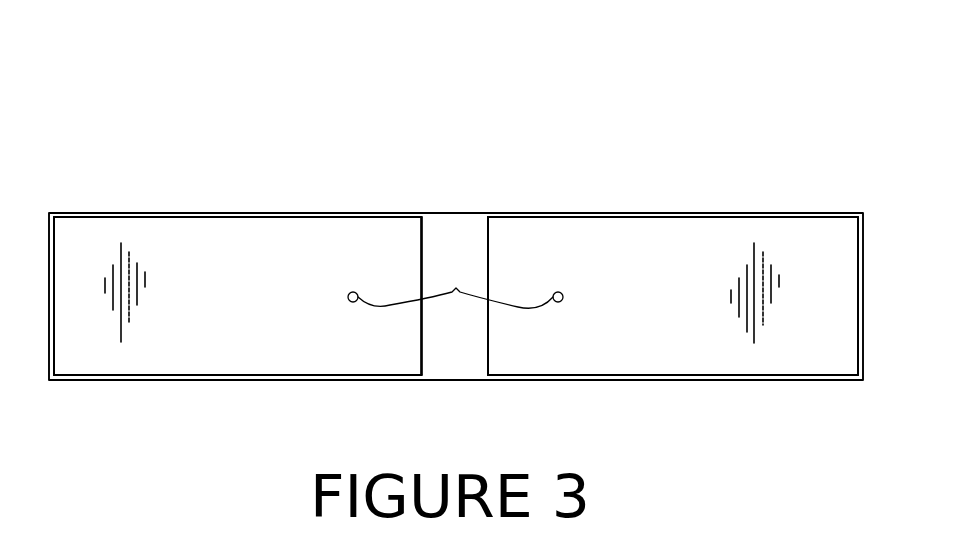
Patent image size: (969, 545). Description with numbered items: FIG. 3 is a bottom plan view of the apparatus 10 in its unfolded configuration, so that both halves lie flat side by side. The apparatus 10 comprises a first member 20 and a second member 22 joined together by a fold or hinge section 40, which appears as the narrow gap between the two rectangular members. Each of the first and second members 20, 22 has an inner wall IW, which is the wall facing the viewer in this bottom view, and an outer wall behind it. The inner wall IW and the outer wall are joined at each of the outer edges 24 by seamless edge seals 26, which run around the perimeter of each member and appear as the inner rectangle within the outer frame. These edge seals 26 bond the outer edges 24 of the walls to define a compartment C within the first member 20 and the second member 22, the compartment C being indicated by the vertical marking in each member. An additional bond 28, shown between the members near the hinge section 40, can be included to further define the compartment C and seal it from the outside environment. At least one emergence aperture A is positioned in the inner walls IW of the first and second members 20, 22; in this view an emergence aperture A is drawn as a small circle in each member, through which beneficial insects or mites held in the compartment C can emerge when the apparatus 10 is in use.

The apparatus 10 is at (347, 103).
The first member 20 is at (116, 411).
The second member 22 is at (653, 174).
The outer edges 24 is at (390, 213).
The edge seals 26 is at (299, 217).
The additional bond 28 is at (422, 363).
The hinge section 40 is at (443, 256).
The emergence aperture A is at (455, 289).
The compartment C is at (85, 272).
The inner wall IW is at (192, 245).